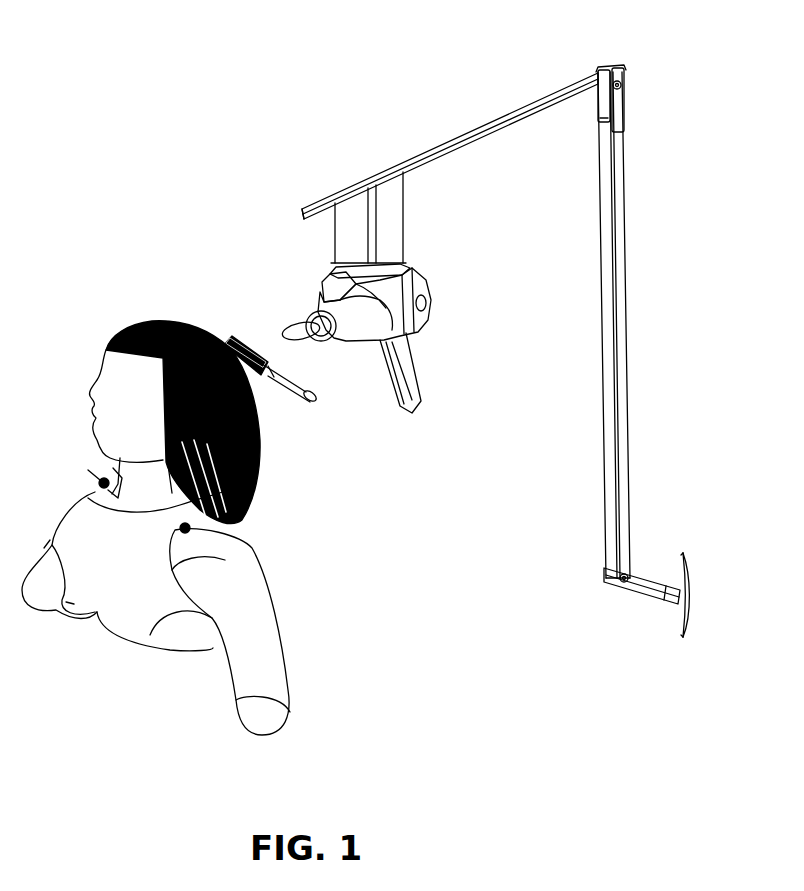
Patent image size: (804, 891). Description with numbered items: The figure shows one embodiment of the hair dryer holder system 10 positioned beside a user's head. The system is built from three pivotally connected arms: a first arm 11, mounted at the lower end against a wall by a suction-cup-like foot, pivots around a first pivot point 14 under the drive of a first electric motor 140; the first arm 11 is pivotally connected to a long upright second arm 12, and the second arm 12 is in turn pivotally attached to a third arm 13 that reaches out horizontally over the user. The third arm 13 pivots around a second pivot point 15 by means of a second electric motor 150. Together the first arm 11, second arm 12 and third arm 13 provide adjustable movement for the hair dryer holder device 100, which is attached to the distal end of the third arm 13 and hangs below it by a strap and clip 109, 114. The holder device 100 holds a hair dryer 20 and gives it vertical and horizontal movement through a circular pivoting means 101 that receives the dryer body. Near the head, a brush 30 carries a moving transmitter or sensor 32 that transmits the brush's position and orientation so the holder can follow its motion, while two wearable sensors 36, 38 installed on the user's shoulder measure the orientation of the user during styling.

The hair dryer holder system 10 is at (233, 141).
The first arm 11 is at (672, 596).
The second arm 12 is at (620, 166).
The third arm 13 is at (586, 92).
The first pivot point 14 is at (628, 588).
The second pivot point 15 is at (622, 87).
The hair dryer 20 is at (418, 399).
The brush 30 is at (297, 398).
The moving transmitter (sensor) 32 is at (240, 346).
The wearable sensor 36 is at (104, 483).
The wearable sensor 38 is at (185, 528).
The hair dryer holder device 100 is at (417, 325).
The circular pivoting means 101 is at (410, 342).
The clip 109 is at (336, 282).
The hanging strap 114 is at (390, 229).
The first electric motor 140 is at (653, 600).
The second electric motor 150 is at (624, 118).